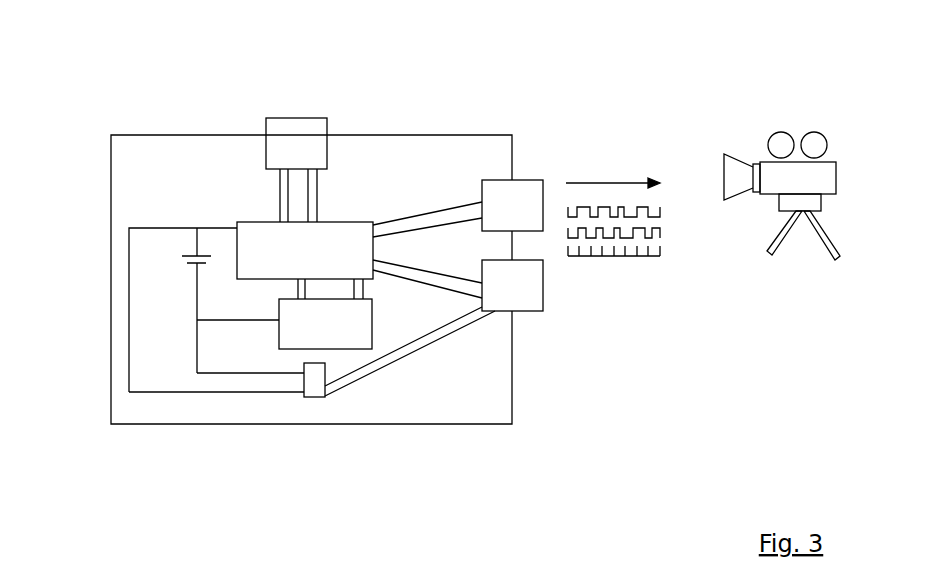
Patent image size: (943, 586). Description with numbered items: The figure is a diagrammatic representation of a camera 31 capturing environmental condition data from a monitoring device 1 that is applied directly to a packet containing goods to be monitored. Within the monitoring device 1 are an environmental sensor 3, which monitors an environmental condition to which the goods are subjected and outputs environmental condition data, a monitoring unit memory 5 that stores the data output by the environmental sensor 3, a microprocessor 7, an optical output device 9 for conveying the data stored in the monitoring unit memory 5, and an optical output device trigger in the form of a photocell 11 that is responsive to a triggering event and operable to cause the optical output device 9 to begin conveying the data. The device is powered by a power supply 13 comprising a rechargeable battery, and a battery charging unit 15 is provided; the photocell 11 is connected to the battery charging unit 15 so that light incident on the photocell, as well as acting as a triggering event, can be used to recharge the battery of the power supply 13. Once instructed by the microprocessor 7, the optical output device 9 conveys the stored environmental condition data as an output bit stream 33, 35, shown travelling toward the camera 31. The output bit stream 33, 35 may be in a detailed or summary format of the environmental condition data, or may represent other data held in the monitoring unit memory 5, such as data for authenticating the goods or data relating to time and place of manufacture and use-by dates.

The monitoring device 1 is at (123, 102).
The environmental sensor 3 is at (298, 138).
The monitoring unit memory 5 is at (352, 332).
The microprocessor 7 is at (348, 237).
The optical output device 9 is at (530, 192).
The photocell 11 is at (523, 298).
The power supply 13 is at (183, 264).
The battery charging unit 15 is at (313, 388).
The camera 31 is at (802, 123).
The output bit stream 33 is at (665, 212).
The output bit stream 35 is at (662, 235).